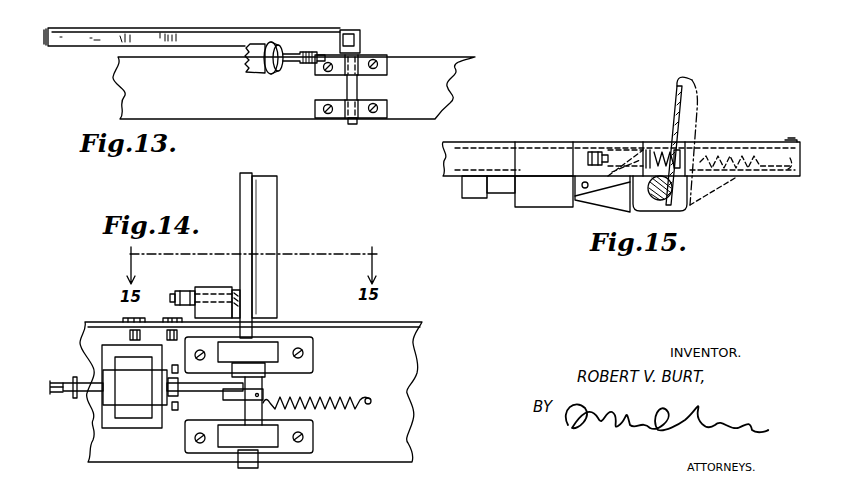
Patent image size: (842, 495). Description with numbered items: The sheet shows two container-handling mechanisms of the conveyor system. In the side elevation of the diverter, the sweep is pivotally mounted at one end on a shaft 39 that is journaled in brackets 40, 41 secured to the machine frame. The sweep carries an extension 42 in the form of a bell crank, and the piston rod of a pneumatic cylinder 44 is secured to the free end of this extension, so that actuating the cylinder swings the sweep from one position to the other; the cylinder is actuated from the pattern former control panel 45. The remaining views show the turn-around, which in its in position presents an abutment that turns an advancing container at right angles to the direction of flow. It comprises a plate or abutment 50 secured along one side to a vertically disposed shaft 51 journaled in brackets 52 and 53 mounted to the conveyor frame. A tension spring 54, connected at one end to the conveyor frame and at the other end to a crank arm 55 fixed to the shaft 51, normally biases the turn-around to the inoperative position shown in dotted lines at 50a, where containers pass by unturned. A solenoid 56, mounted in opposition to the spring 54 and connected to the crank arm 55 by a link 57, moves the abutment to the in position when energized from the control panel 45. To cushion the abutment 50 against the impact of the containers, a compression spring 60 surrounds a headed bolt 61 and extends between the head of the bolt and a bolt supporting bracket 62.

In FIG. 13, the shaft 39 is at (360, 86).
In FIG. 13, the bracket 40 is at (386, 53).
In FIG. 13, the bracket 41 is at (389, 107).
In FIG. 13, the extension 42 is at (362, 37).
In FIG. 13, the pneumatic cylinder 44 is at (258, 72).
In FIG. 13, the pattern former control panel 45 is at (298, 63).
In FIG. 14, the plate or abutment 50 is at (277, 215).
In FIG. 15, the plate or abutment 50 is at (687, 84).
In FIG. 15, the inoperative position of abutment 50a is at (700, 196).
In FIG. 14, the vertically disposed shaft 51 is at (240, 197).
In FIG. 15, the vertically disposed shaft 51 is at (648, 203).
In FIG. 14, the bracket 52 is at (293, 330).
In FIG. 15, the bracket 52 is at (684, 209).
In FIG. 14, the bracket 53 is at (317, 443).
In FIG. 14, the tension spring 54 is at (323, 397).
In FIG. 15, the tension spring 54 is at (735, 148).
In FIG. 14, the crank arm 55 is at (225, 395).
In FIG. 15, the crank arm 55 is at (632, 185).
In FIG. 14, the solenoid 56 is at (152, 427).
In FIG. 15, the solenoid 56 is at (558, 207).
In FIG. 14, the link 57 is at (200, 385).
In FIG. 15, the link 57 is at (625, 142).
In FIG. 15, the compression spring 60 is at (658, 148).
In FIG. 14, the headed bolt 61 is at (236, 287).
In FIG. 15, the headed bolt 61 is at (678, 147).
In FIG. 14, the bolt supporting bracket 62 is at (203, 287).
In FIG. 15, the bolt supporting bracket 62 is at (612, 150).